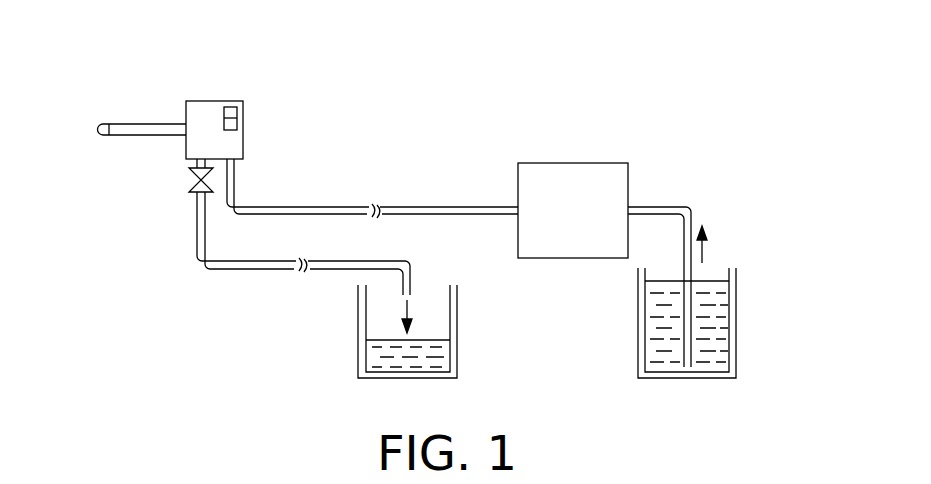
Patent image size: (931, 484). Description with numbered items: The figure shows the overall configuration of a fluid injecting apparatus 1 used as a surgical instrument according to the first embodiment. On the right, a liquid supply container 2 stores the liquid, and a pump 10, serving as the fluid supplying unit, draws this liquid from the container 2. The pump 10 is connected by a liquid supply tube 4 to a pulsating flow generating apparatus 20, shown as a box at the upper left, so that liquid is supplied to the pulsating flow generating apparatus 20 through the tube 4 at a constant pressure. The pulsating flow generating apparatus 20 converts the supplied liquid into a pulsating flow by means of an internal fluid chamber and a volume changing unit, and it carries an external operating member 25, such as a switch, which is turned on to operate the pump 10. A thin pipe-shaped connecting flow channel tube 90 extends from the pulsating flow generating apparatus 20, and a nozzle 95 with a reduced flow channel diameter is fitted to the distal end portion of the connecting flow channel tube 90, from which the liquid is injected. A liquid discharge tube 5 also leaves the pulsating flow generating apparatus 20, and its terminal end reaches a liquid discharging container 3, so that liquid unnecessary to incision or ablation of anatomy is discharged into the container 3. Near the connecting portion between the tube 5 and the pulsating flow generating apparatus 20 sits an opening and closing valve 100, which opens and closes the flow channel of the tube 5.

The fluid injecting apparatus 1 is at (491, 67).
The liquid supply container 2 is at (736, 320).
The liquid discharging container 3 is at (457, 328).
The liquid supply tube 4 is at (343, 207).
The liquid discharge tube 5 is at (252, 269).
The pump 10 is at (578, 163).
The pulsating flow generating apparatus 20 is at (218, 101).
The external operating member 25 is at (243, 122).
The connecting flow channel tube 90 is at (160, 124).
The nozzle 95 is at (105, 124).
The opening and closing valve 100 is at (190, 176).